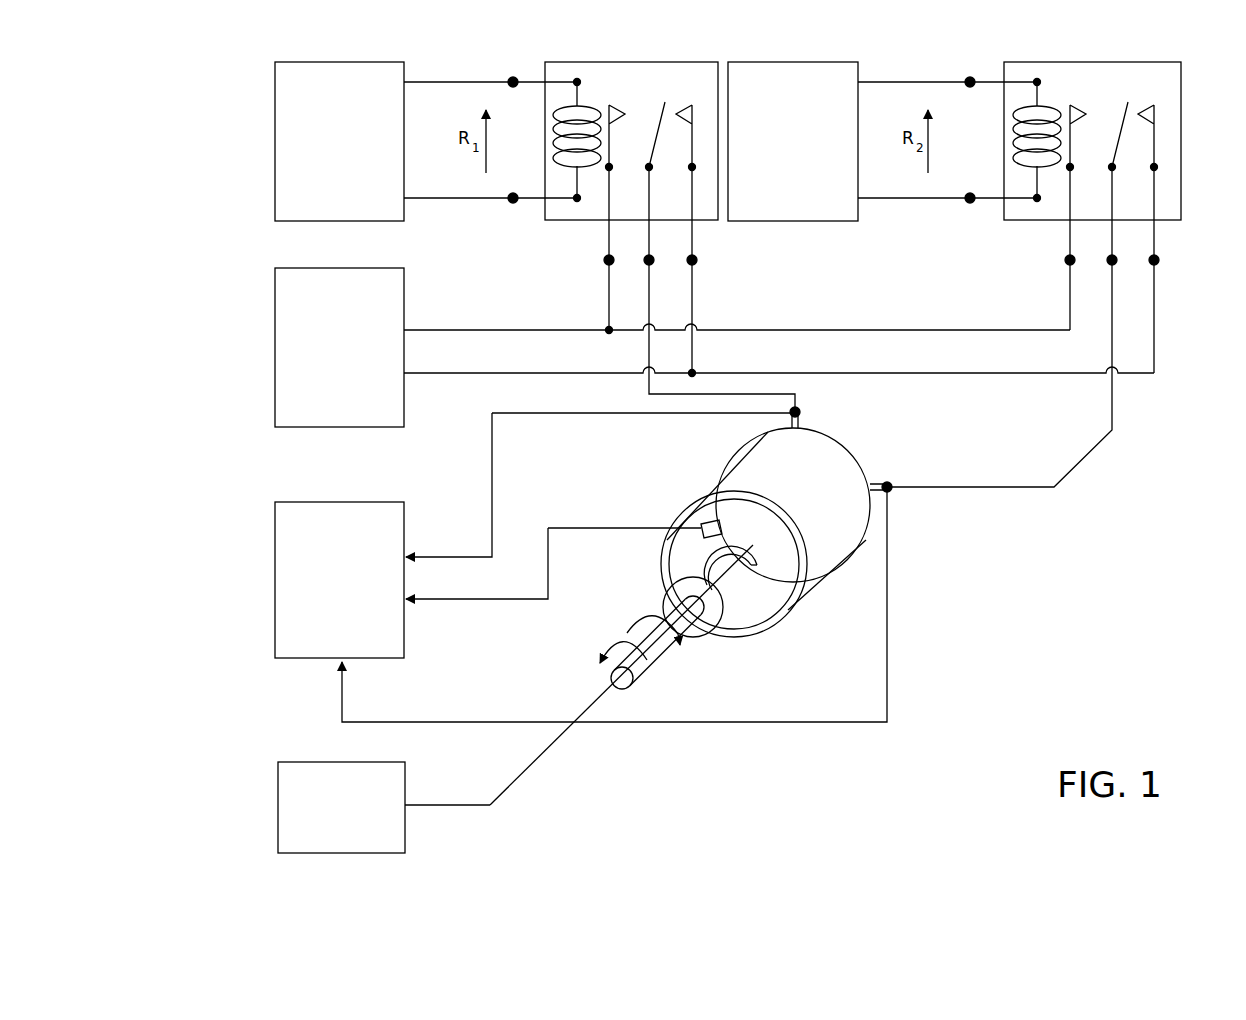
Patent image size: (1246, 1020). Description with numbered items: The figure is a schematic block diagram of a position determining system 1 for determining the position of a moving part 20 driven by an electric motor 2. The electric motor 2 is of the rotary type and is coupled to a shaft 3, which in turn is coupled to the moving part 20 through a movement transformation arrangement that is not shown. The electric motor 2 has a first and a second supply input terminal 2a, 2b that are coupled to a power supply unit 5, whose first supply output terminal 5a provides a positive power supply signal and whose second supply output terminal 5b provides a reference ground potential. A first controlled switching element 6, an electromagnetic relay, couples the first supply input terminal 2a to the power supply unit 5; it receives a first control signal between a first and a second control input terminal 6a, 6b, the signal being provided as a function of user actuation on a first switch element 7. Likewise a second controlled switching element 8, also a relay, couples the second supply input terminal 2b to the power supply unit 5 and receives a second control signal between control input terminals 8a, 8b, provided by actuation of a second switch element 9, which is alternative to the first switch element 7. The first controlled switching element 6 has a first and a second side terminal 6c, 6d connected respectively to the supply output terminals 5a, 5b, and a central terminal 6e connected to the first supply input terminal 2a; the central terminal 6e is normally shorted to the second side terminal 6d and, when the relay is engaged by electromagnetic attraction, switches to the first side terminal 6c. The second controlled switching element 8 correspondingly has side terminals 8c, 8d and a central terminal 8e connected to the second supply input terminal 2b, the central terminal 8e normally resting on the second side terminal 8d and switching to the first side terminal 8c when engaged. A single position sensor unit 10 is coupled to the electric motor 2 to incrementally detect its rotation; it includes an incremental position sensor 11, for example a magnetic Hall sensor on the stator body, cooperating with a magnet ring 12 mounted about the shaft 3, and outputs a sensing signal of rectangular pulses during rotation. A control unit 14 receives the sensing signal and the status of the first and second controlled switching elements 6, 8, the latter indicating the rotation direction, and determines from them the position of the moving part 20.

The position determining system 1 is at (210, 127).
The electric motor 2 is at (738, 462).
The first supply input terminal 2a is at (800, 413).
The second supply input terminal 2b is at (890, 484).
The shaft 3 is at (655, 648).
The power supply unit 5 is at (275, 340).
The first supply output terminal 5a is at (436, 330).
The second supply output terminal 5b is at (430, 375).
The first controlled switching element 6 is at (690, 75).
The first control input terminal 6a is at (513, 80).
The second control input terminal 6b is at (513, 201).
The first side terminal 6c is at (614, 262).
The second side terminal 6d is at (697, 262).
The central terminal 6e is at (654, 262).
The first switch element 7 is at (273, 150).
The second controlled switching element 8 is at (1137, 75).
The first control input terminal 8a is at (970, 80).
The second control input terminal 8b is at (970, 201).
The first side terminal 8c is at (1075, 262).
The second side terminal 8d is at (1159, 261).
The central terminal 8e is at (1117, 262).
The second switch element 9 is at (806, 75).
The position sensor unit 10 is at (779, 585).
The incremental position sensor 11 is at (704, 524).
The magnet ring 12 is at (732, 604).
The control unit 14 is at (275, 568).
The moving part 20 is at (278, 780).